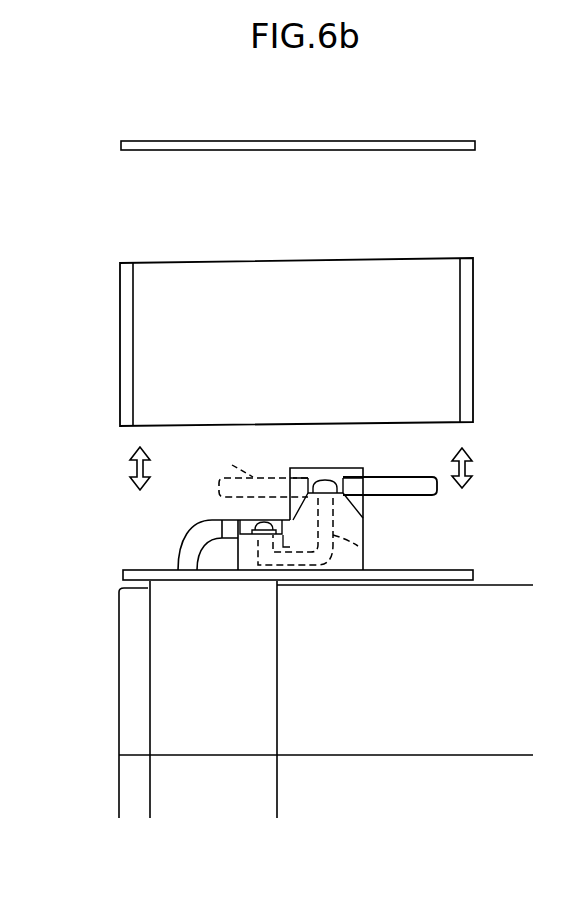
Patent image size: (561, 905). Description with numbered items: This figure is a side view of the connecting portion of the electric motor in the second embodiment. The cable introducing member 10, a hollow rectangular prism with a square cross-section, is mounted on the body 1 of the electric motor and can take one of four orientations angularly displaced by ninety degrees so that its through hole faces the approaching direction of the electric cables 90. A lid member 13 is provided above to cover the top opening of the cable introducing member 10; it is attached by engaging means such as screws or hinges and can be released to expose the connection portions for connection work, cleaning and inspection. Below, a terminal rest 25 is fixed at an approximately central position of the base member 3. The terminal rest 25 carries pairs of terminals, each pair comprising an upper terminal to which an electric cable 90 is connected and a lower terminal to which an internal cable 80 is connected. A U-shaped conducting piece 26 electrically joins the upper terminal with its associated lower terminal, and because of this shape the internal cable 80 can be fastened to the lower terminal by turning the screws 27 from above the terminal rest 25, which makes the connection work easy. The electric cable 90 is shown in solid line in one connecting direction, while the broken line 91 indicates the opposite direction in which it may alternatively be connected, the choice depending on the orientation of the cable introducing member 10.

The body 1 is at (162, 675).
The base member 3 is at (456, 570).
The cable introducing member 10 is at (136, 345).
The lid member 13 is at (384, 141).
The terminal rest 25 is at (318, 468).
The conducting piece 26 is at (362, 548).
The screws 27 is at (257, 519).
The internal cables 80 is at (193, 542).
The electric cables 90 is at (403, 477).
The broken line 91 is at (229, 464).